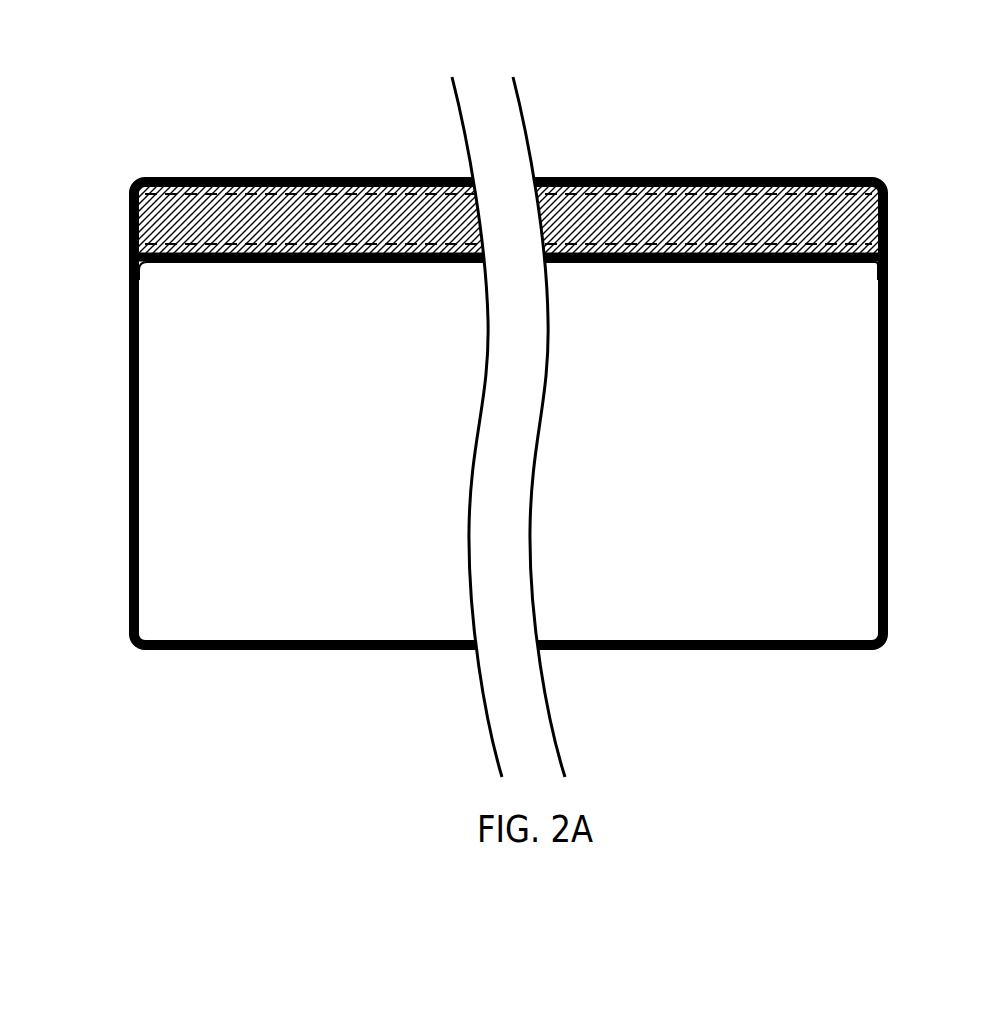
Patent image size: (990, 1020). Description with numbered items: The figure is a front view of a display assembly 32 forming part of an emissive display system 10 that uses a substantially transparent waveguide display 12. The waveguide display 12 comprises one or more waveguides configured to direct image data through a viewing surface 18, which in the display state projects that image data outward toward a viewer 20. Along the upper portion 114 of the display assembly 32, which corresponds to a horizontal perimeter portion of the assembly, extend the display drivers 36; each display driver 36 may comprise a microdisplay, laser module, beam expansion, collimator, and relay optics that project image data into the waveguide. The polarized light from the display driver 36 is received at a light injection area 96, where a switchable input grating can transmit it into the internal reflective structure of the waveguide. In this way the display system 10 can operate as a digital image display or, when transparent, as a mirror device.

The emissive display system 10 is at (248, 107).
The waveguide display 12 is at (858, 323).
The viewing surface 18 is at (614, 426).
The viewer 20 is at (989, 405).
The display assembly 32 is at (178, 180).
The display driver 36 is at (652, 221).
The light injection area 96 is at (822, 623).
The upper portion 114 is at (777, 221).